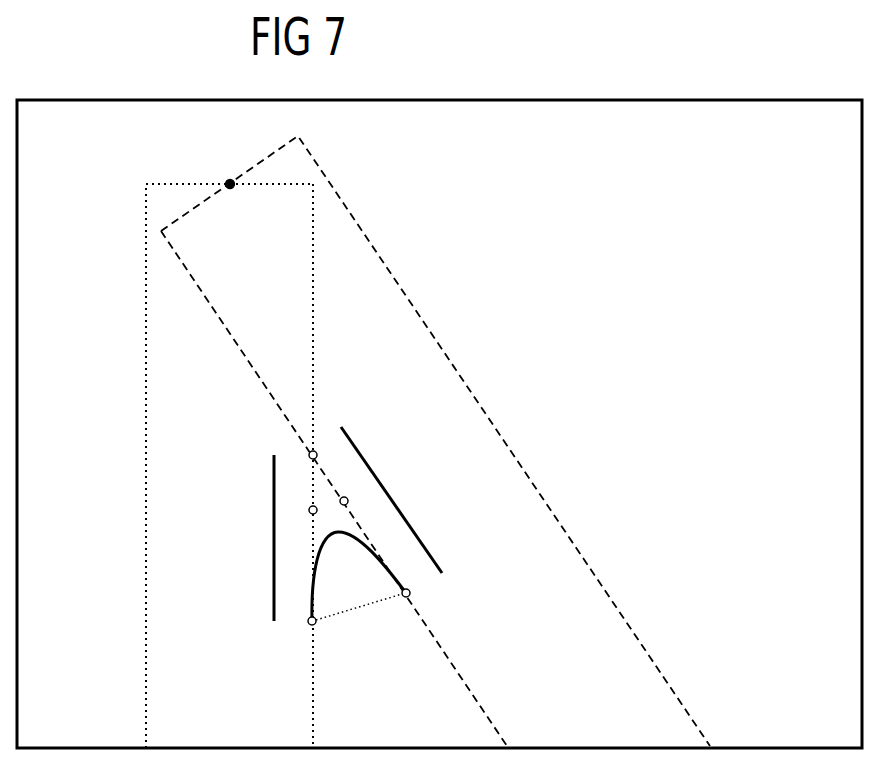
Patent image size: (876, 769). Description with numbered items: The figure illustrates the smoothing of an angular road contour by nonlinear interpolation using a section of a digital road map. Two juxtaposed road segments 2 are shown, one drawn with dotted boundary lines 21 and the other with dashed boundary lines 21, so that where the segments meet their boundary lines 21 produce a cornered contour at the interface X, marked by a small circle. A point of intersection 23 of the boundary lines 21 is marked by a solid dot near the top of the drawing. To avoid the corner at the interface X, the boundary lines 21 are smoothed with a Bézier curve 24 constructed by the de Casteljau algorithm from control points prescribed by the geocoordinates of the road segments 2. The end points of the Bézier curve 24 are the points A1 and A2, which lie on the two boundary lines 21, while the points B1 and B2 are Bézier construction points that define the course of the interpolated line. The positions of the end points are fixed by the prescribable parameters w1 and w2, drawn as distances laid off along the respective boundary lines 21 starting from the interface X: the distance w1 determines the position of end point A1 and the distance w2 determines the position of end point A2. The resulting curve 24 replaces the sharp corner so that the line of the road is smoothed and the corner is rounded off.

The road segments 2 is at (177, 544).
The boundary lines 21 is at (313, 712).
The point of intersection 23 is at (228, 182).
The curve 24 is at (337, 533).
The interface X is at (315, 451).
The Bézier construction point B1 is at (353, 484).
The Bézier construction point B2 is at (299, 527).
The end point of Bézier curve A1 is at (427, 604).
The end point of Bézier curve A2 is at (329, 641).
The prescribable parameter w1 is at (409, 500).
The prescribable parameter w2 is at (253, 539).